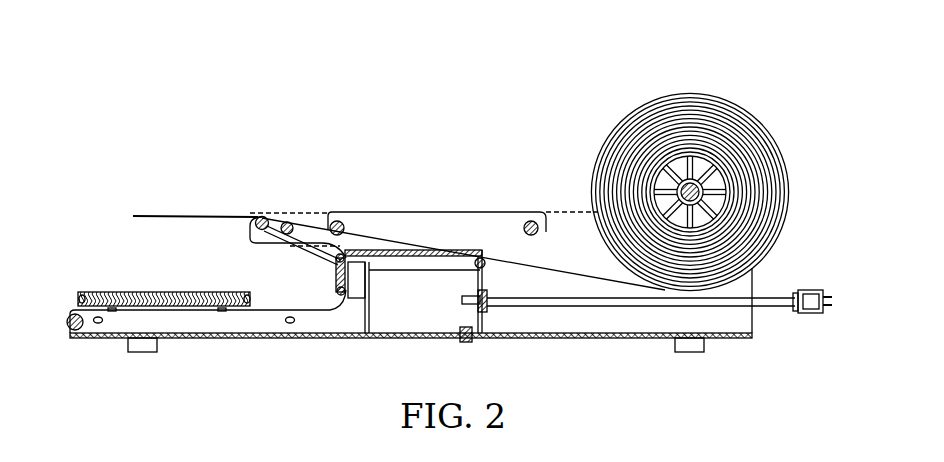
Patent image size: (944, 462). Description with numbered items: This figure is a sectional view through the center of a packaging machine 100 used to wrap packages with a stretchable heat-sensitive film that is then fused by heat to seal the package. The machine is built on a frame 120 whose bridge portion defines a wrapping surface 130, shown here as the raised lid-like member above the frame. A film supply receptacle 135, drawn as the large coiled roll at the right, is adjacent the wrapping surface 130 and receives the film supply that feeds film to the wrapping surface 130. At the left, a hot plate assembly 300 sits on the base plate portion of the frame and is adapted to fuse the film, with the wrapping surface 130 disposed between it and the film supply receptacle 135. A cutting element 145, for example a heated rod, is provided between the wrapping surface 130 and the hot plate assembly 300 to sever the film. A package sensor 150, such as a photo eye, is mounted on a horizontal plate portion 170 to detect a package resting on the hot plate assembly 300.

The packaging machine 100 is at (122, 112).
The frame 120 is at (752, 323).
The wrapping surface 130 is at (430, 212).
The film supply receptacle 135 is at (702, 194).
The cutting element 145 is at (260, 216).
The package sensor 150 is at (372, 281).
The horizontal plate portion 170 is at (342, 289).
The hot plate assembly 300 is at (160, 292).